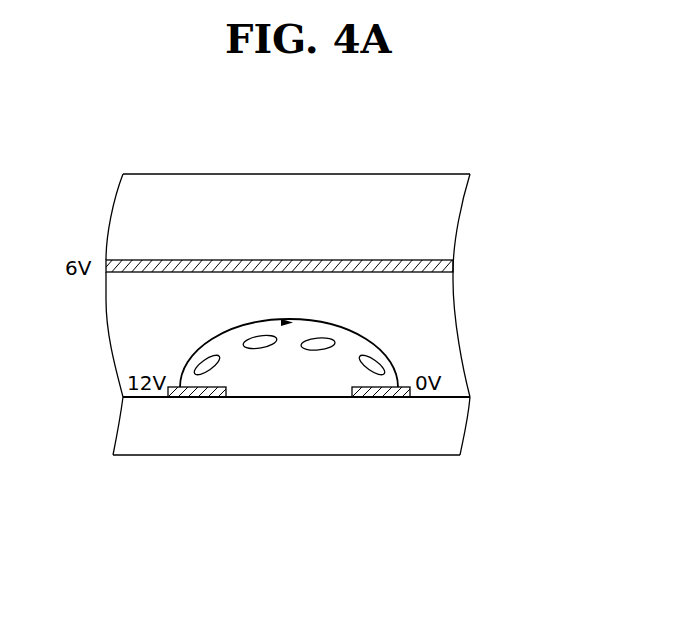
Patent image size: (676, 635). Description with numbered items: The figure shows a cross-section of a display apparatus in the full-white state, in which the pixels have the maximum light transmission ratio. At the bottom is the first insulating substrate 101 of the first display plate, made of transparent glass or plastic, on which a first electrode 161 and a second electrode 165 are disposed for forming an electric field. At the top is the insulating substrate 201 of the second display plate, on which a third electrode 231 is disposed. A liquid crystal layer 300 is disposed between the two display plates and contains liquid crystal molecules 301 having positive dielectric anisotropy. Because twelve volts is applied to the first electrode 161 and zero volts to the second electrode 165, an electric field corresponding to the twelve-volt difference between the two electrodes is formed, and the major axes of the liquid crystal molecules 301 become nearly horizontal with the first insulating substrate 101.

The insulating substrate 201 is at (296, 188).
The third electrode 231 is at (208, 260).
The liquid crystal layer 300 is at (480, 272).
The liquid crystal molecules 301 is at (322, 342).
The first electrode 161 is at (195, 397).
The second electrode 165 is at (375, 397).
The insulating substrate 101 is at (283, 443).